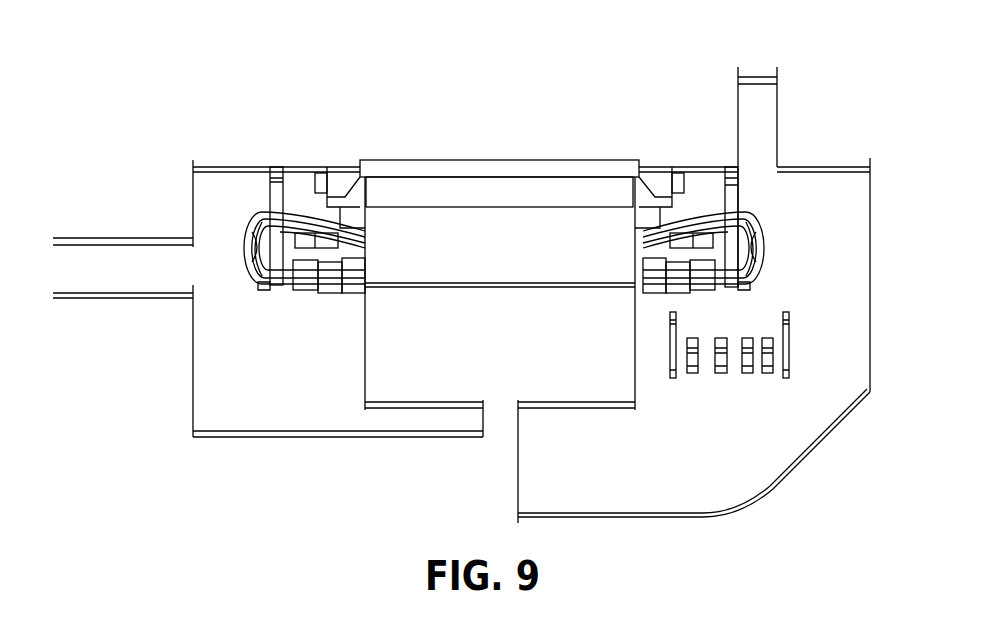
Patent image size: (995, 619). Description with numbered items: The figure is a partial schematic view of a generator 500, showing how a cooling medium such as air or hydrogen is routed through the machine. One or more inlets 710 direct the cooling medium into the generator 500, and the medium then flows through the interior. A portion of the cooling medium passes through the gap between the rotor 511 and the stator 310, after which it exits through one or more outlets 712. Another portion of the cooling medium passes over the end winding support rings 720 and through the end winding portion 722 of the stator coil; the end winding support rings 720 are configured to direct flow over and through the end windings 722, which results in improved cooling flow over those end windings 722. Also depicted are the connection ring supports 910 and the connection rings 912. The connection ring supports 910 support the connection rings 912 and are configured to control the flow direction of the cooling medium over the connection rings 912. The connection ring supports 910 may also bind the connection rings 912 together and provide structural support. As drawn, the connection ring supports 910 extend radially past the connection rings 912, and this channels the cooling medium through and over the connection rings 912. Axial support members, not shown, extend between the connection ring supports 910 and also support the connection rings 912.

The generator 500 is at (846, 128).
The inlet 710 is at (118, 283).
The outlet 712 is at (750, 117).
The end winding support ring 720 is at (275, 198).
The end winding portion of the stator coil 722 is at (315, 268).
The stator 310 is at (521, 254).
The rotor 511 is at (521, 351).
The connection ring support 910 is at (670, 355).
The connection ring 912 is at (720, 363).